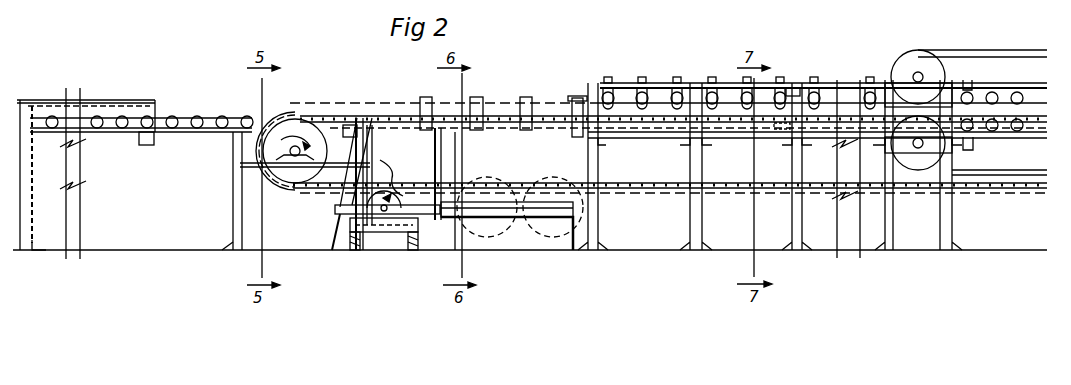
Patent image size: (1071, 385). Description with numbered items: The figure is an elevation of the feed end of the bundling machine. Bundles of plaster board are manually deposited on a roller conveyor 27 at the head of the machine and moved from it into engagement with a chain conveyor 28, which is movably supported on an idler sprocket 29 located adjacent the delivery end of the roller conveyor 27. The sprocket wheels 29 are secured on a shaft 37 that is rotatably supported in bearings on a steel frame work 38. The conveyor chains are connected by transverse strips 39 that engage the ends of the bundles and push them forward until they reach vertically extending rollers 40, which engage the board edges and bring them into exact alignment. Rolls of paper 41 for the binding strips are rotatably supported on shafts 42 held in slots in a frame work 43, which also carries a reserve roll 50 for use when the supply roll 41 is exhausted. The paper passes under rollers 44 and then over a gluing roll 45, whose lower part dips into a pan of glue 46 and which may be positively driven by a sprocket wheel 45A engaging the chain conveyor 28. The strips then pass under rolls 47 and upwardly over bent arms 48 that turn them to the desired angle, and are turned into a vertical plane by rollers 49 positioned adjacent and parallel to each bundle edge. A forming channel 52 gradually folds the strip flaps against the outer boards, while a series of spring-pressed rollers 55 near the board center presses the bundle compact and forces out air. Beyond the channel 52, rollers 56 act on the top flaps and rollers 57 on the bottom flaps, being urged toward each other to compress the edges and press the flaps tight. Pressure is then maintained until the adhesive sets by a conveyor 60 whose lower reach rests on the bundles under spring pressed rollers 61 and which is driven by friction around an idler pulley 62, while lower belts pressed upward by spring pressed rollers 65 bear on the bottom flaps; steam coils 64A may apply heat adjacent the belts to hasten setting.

The roller conveyor 27 is at (197, 117).
The chain conveyor 28 is at (346, 121).
The idler sprocket 29 is at (318, 128).
The shaft 37 is at (294, 162).
The steel frame work 38 is at (250, 169).
The transverse strips 39 is at (283, 115).
The vertically extending rollers 40 is at (455, 86).
The rolls of paper 41 is at (500, 240).
The shafts 42 is at (487, 208).
The frame work 43 is at (542, 210).
The rollers 44 is at (420, 215).
The gluing roll 45 is at (377, 200).
The sprocket wheel 45A is at (399, 172).
The pan of glue 46 is at (400, 225).
The rolls 47 is at (338, 214).
The arms 48 is at (357, 126).
The rollers 49 is at (572, 105).
The reserve roll 50 is at (536, 238).
The forming strip or channel 52 is at (668, 110).
The rollers 55 is at (662, 105).
The rollers 56 is at (790, 90).
The rollers 57 is at (783, 126).
The conveyor 60 is at (1043, 51).
The spring pressed rollers 61 is at (992, 94).
The idler pulley 62 is at (940, 92).
The steam coils 64A is at (967, 140).
The spring pressed rollers 65 is at (1017, 131).